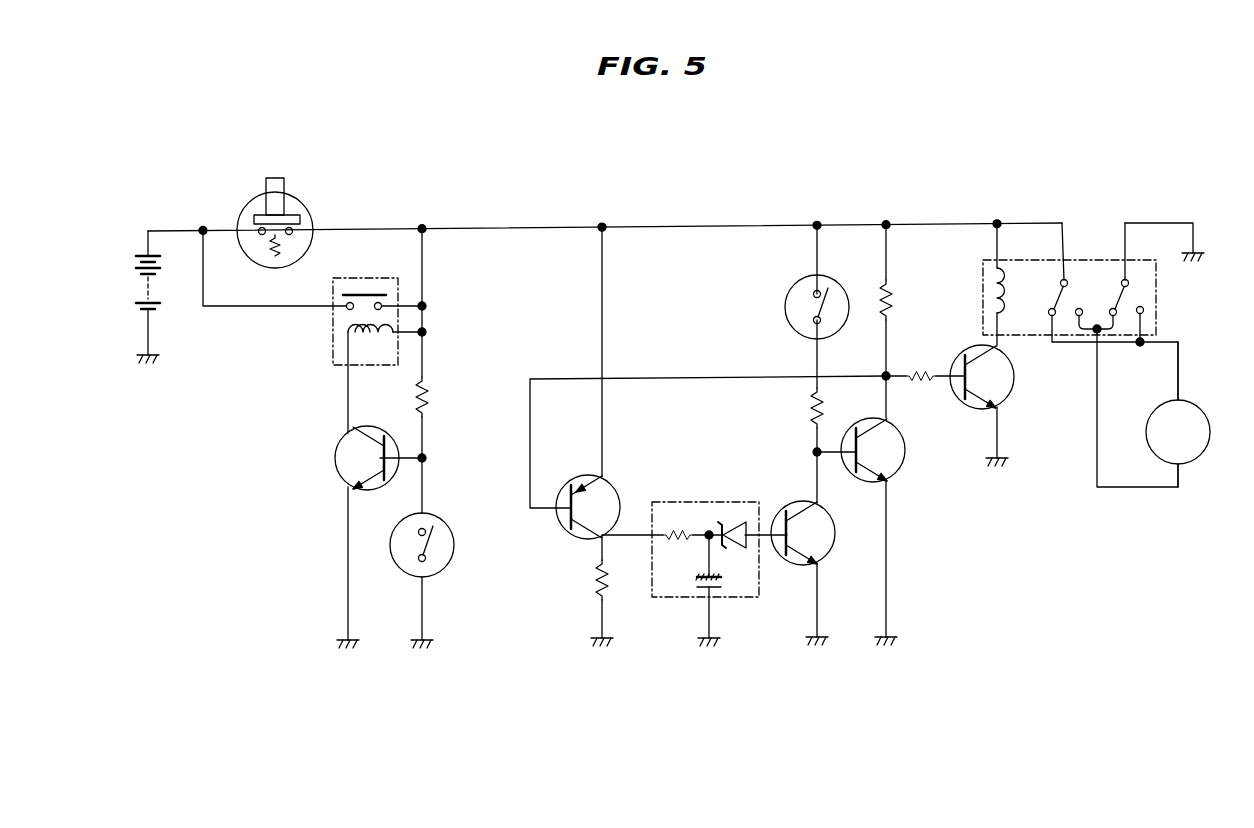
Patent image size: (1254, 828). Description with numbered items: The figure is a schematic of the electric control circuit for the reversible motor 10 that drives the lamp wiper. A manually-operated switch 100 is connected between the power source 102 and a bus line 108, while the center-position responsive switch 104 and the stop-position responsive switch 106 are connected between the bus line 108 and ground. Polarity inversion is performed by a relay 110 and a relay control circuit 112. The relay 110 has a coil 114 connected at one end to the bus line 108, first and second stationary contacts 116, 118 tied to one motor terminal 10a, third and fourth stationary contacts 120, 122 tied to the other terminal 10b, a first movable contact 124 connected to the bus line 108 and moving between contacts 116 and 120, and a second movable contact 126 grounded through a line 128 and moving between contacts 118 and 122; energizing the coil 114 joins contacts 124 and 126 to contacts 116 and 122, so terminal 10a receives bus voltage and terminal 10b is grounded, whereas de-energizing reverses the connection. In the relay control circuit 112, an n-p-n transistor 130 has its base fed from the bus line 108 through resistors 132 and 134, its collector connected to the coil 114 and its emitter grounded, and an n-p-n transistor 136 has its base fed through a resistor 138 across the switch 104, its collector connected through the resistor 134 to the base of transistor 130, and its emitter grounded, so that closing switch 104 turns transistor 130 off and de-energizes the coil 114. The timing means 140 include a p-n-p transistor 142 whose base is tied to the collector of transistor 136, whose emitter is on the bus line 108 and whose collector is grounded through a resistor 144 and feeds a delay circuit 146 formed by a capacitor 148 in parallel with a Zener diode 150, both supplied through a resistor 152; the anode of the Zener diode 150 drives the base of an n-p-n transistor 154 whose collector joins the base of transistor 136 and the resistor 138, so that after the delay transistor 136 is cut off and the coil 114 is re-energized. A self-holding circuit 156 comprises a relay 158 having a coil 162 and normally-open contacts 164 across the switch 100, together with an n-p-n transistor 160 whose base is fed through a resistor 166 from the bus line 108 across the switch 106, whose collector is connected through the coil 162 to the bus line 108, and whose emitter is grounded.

The reversible motor 10 is at (1150, 412).
The motor terminal 10a is at (1180, 370).
The motor terminal 10b is at (1178, 490).
The manually-operated switch 100 is at (302, 203).
The power source 102 is at (157, 297).
The center-position responsive switch 104 is at (790, 288).
The stop-position responsive switch 106 is at (435, 515).
The bus line 108 is at (505, 228).
The relay 110 is at (1072, 293).
The relay control circuit 112 is at (906, 438).
The coil 114 is at (988, 300).
The first stationary contact 116 is at (1048, 315).
The second stationary contact 118 is at (1148, 312).
The third stationary contact 120 is at (1078, 318).
The fourth stationary contact 122 is at (1119, 298).
The first movable contact 124 is at (1061, 286).
The second movable contact 126 is at (1128, 302).
The line 128 is at (1152, 222).
The n-p-n transistor 130 is at (1004, 398).
The resistor 132 is at (890, 290).
The resistor 134 is at (933, 379).
The n-p-n transistor 136 is at (892, 476).
The resistor 138 is at (810, 403).
The timing means 140 is at (587, 540).
The p-n-p transistor 142 is at (612, 490).
The resistor 144 is at (598, 590).
The delay circuit 146 is at (726, 546).
The capacitor 148 is at (716, 587).
The Zener diode 150 is at (742, 518).
The resistor 152 is at (688, 537).
The n-p-n transistor 154 is at (825, 553).
The self-holding circuit 156 is at (324, 322).
The relay 158 is at (333, 343).
The n-p-n transistor 160 is at (335, 450).
The coil 162 is at (384, 340).
The normally-open contacts 164 is at (372, 292).
The resistor 166 is at (432, 388).